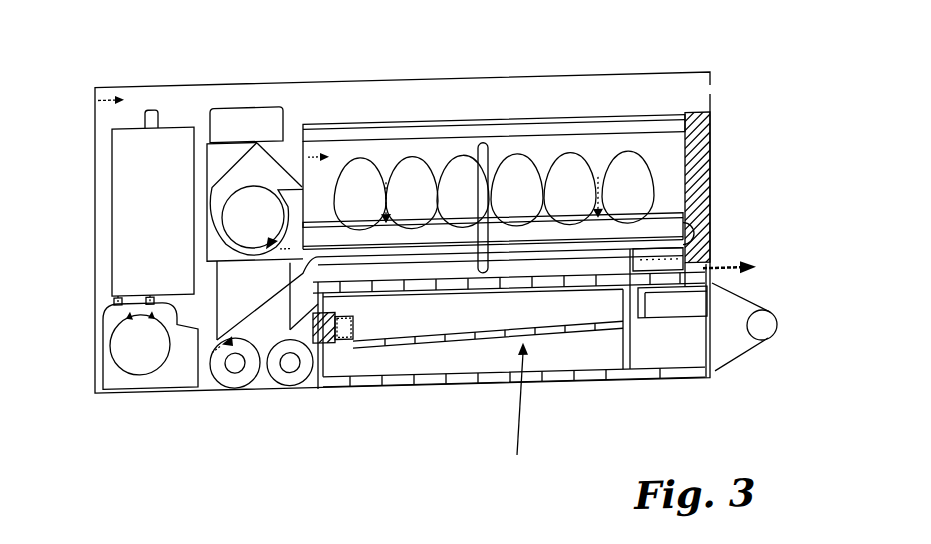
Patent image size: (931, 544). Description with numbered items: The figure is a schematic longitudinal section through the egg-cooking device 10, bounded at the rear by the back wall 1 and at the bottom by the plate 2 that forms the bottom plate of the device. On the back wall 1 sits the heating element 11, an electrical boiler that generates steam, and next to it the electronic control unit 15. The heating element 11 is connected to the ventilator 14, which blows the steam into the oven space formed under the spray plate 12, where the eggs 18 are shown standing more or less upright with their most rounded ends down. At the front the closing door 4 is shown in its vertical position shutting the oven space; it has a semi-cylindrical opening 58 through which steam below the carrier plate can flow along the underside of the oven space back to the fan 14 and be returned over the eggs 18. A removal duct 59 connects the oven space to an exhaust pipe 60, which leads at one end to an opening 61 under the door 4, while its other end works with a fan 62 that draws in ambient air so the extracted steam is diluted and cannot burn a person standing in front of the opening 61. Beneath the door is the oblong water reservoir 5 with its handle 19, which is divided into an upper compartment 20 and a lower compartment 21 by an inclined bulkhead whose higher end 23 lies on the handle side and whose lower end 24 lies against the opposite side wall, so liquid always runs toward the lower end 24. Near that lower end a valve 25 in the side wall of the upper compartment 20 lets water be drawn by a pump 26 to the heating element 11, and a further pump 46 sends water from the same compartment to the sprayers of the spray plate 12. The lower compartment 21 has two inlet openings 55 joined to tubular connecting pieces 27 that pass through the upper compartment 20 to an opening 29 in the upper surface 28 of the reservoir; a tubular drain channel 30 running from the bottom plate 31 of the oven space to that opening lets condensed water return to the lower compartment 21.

The back wall 1 is at (94, 194).
The plate 2 is at (205, 398).
The closing door 4 is at (698, 148).
The water reservoir 5 is at (516, 412).
The apparatus 10 is at (653, 242).
The heating element 11 is at (148, 179).
The spray plate 12 is at (417, 133).
The ventilator 14 is at (253, 194).
The electronic control unit 15 is at (235, 128).
The eggs 18 is at (628, 206).
The handle 19 is at (738, 359).
The upper compartment 20 is at (432, 329).
The lower compartment 21 is at (607, 372).
The higher end 23 is at (690, 330).
The lower end 24 is at (358, 342).
The valve 25 is at (338, 339).
The pump 26 is at (283, 390).
The tubular connecting pieces 27 is at (652, 328).
The upper surface 28 is at (556, 276).
The opening 29 is at (690, 274).
The tubular drain channel 30 is at (630, 273).
The bottom plate 31 is at (503, 266).
The pump 46 is at (228, 391).
The inlet openings 55 is at (633, 334).
The opening 58 is at (692, 254).
The removal duct 59 is at (510, 196).
The exhaust pipe 60 is at (332, 281).
The opening 61 is at (712, 283).
The fan 62 is at (132, 343).